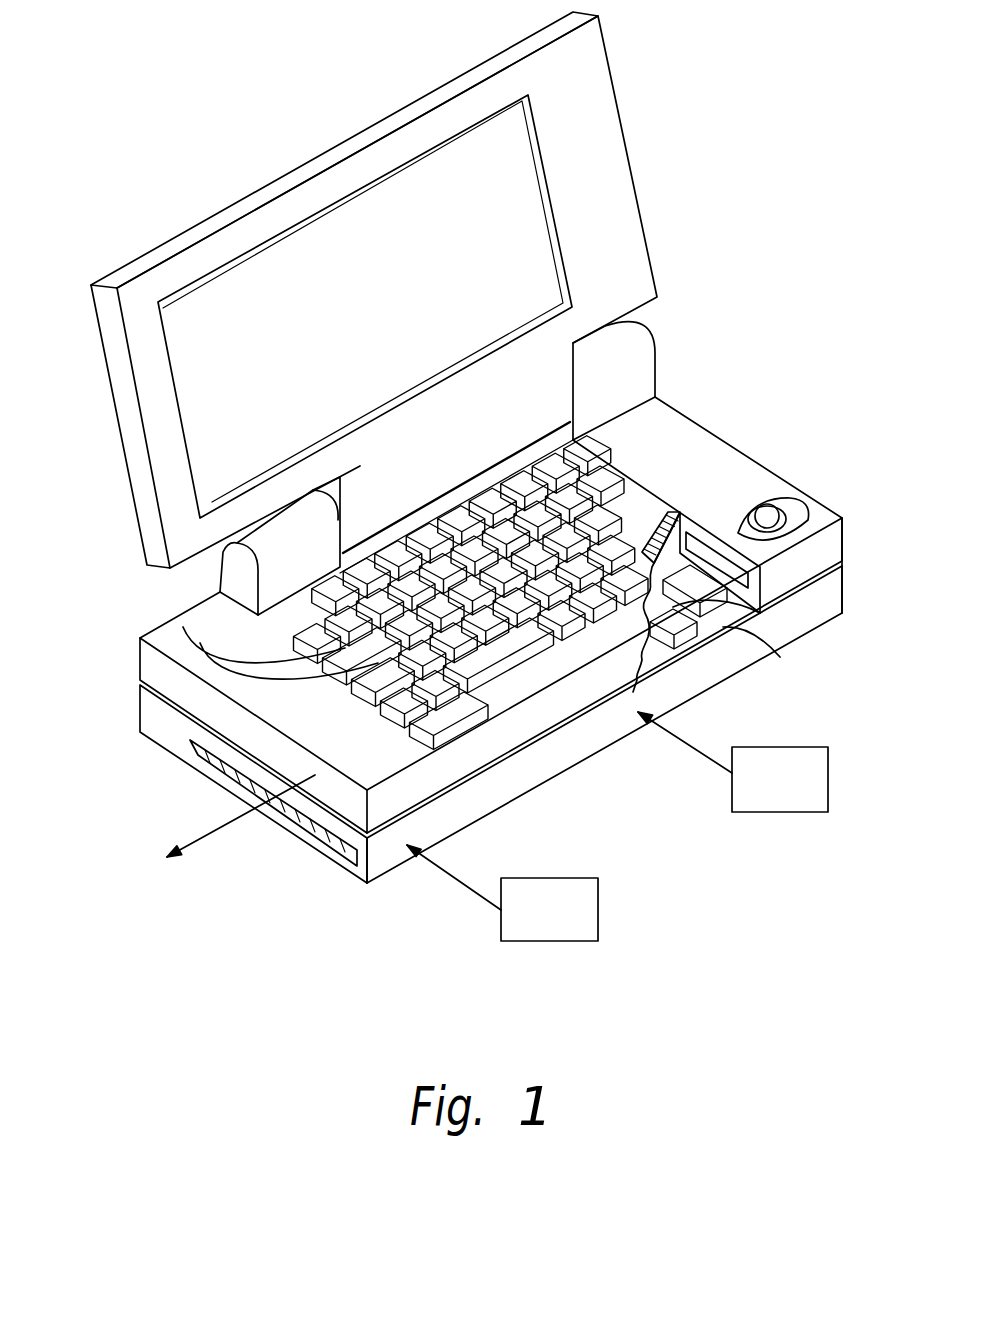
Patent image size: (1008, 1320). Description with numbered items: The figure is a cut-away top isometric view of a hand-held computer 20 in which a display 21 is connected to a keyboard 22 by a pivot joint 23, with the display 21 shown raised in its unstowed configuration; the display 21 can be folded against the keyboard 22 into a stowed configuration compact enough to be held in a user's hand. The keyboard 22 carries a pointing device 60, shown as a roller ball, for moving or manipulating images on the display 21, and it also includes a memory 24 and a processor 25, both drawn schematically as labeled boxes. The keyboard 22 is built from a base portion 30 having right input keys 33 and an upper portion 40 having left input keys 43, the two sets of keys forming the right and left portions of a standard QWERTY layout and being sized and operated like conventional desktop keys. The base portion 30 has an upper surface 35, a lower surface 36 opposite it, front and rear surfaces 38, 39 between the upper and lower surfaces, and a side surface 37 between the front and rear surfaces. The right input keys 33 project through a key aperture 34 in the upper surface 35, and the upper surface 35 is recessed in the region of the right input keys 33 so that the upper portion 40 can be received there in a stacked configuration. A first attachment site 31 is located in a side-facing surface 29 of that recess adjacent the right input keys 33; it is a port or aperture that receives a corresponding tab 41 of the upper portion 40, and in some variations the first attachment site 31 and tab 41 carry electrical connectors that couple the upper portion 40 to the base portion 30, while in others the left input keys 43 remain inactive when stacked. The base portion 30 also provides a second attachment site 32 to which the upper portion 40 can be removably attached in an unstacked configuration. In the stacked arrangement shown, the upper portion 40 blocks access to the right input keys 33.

The hand-held computer 20 is at (778, 395).
The display 21 is at (613, 83).
The keyboard 22 is at (858, 746).
The pivot joint 23 is at (670, 325).
The memory 24 is at (560, 941).
The processor 25 is at (780, 812).
The side-facing surface 29 is at (710, 540).
The base portion 30 is at (844, 556).
The first attachment site 31 is at (757, 588).
The second attachment site 32 is at (333, 851).
The right input keys 33 is at (733, 610).
The key aperture 34 is at (681, 652).
The upper surface 35 is at (731, 628).
The lower surface 36 is at (540, 786).
The side surface 37 is at (242, 820).
The front surface 38 is at (604, 724).
The rear surface 39 is at (457, 734).
The upper portion 40 is at (480, 591).
The tab 41 is at (684, 516).
The left input keys 43 is at (200, 647).
The pointing device 60 is at (812, 496).